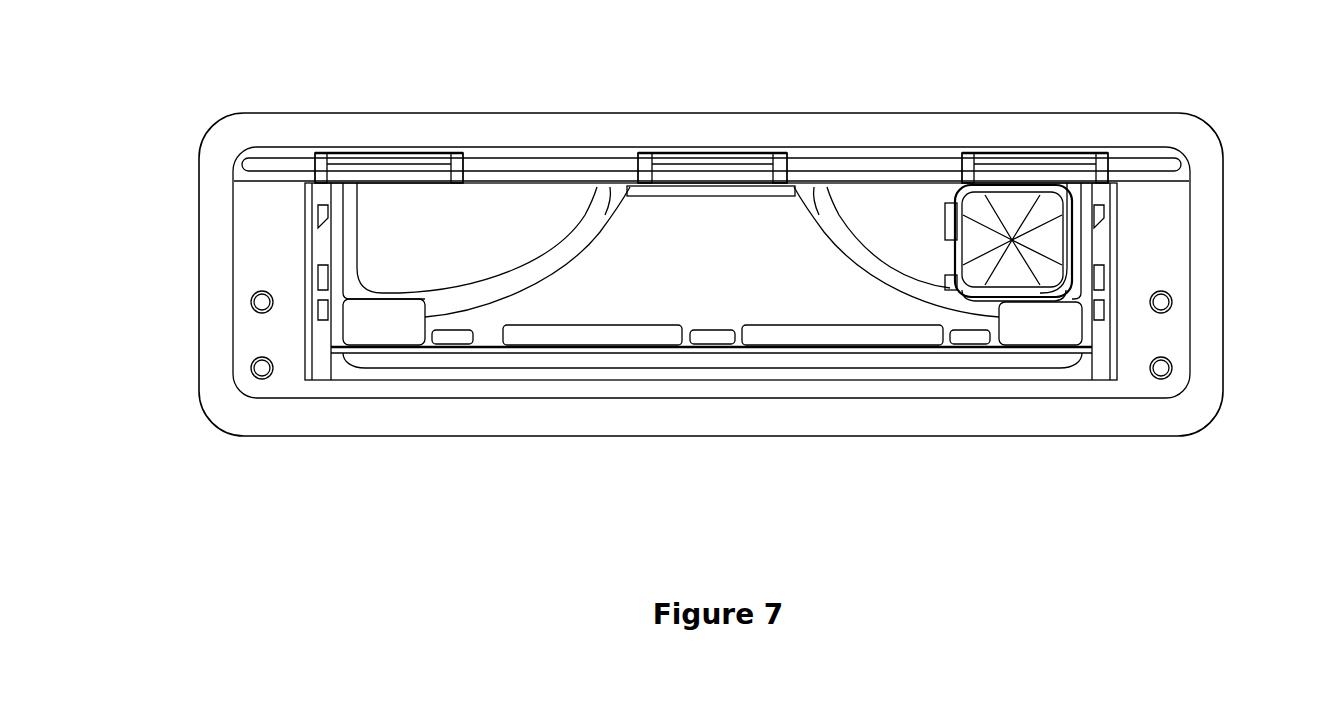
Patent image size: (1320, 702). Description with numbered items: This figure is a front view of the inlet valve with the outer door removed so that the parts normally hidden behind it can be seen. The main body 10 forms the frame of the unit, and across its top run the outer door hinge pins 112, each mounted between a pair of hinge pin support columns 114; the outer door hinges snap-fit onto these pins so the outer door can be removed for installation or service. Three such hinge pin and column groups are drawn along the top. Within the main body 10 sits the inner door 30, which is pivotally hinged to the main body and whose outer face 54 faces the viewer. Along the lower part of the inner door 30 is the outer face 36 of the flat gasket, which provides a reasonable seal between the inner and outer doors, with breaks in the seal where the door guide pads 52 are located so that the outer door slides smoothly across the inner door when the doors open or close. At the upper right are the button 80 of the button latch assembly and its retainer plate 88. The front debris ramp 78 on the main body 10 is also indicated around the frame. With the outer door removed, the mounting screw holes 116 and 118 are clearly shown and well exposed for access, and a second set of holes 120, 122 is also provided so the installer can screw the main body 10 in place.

The main body 10 is at (543, 203).
The inner door 30 is at (700, 215).
The outer face of the flat gasket 36 is at (550, 340).
The door guide pads 52 is at (454, 340).
The outer face of the inner door 54 is at (701, 285).
The front debris ramp 78 is at (204, 242).
The button 80 is at (1010, 195).
The retainer plate 88 is at (950, 212).
The outer door hinge pins 112 is at (405, 158).
The hinge pin support columns 114 is at (330, 152).
The mounting screw hole 116 is at (265, 380).
The mounting screw hole 118 is at (1163, 380).
The second set hole 120 is at (250, 302).
The second set hole 122 is at (1173, 301).